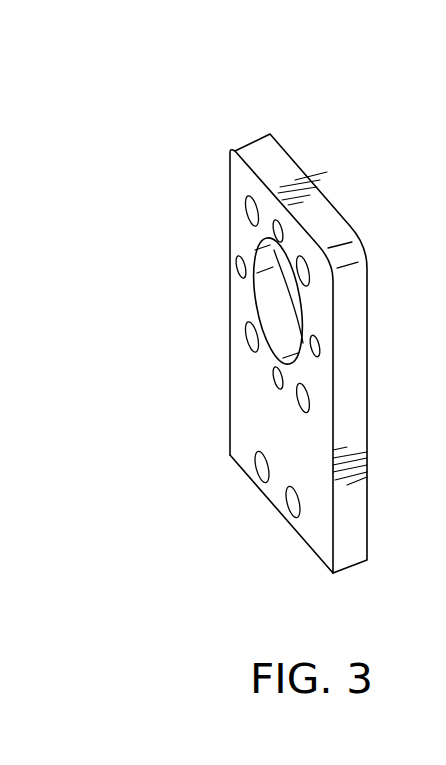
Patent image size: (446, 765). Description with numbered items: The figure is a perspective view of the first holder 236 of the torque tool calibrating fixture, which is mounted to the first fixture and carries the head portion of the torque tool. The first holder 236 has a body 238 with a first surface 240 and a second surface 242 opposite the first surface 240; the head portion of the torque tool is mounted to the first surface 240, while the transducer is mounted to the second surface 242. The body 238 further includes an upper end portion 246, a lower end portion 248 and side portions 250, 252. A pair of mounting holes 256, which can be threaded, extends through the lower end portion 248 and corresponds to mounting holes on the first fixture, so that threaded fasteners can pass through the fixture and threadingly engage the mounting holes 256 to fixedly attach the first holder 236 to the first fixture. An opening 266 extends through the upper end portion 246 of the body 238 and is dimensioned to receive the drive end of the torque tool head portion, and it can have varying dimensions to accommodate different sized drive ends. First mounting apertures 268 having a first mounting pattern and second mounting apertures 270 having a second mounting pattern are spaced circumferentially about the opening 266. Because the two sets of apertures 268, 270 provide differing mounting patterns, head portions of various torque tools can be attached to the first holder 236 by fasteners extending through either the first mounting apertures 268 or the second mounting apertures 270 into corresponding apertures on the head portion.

The first holder 236 is at (366, 111).
The body 238 is at (318, 546).
The first surface 240 is at (244, 413).
The second surface 242 is at (368, 357).
The upper end portion 246 is at (292, 240).
The lower end portion 248 is at (278, 503).
The side portion 250 is at (349, 419).
The side portion 252 is at (232, 318).
The mounting holes 256 is at (253, 473).
The opening 266 is at (298, 303).
The first mounting apertures 268 is at (247, 212).
The second mounting apertures 270 is at (276, 218).